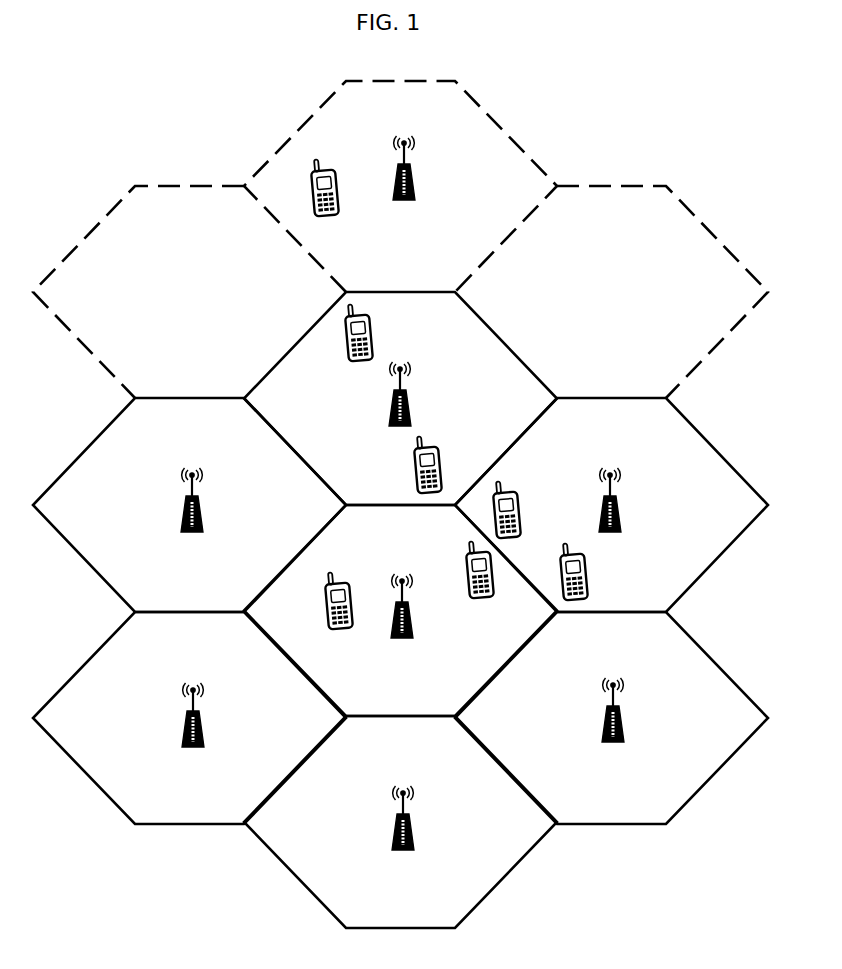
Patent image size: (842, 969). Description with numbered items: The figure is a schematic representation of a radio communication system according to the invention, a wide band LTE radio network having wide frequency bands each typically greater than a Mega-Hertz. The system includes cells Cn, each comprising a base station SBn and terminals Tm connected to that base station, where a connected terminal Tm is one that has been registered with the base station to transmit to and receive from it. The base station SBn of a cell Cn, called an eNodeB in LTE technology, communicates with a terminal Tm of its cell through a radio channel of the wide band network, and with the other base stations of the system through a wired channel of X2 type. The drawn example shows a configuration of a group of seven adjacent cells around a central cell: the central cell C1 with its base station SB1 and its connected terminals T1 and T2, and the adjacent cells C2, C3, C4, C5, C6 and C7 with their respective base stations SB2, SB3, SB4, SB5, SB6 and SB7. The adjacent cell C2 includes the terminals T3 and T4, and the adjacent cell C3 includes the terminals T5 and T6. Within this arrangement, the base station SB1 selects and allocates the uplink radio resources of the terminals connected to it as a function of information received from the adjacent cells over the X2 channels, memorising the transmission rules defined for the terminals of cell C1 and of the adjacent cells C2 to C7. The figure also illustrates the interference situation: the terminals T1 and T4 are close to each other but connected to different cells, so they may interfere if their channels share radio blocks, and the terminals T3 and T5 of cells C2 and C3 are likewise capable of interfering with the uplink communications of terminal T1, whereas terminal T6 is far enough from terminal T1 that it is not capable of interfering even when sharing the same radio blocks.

The cell C1 is at (400, 610).
The cell C2 is at (611, 505).
The cell C3 is at (400, 398).
The cell C4 is at (189, 505).
The cell C5 is at (189, 718).
The cell C6 is at (400, 822).
The cell C7 is at (611, 718).
The cell Cn is at (400, 186).
The base station SB1 is at (384, 625).
The base station SB2 is at (628, 517).
The base station SB3 is at (382, 413).
The base station SB4 is at (174, 519).
The base station SB5 is at (175, 734).
The base station SB6 is at (385, 837).
The base station SB7 is at (595, 729).
The base station SBn is at (386, 187).
The terminal T1 is at (483, 598).
The terminal T2 is at (355, 607).
The terminal T3 is at (522, 520).
The terminal T4 is at (560, 577).
The terminal T5 is at (442, 478).
The terminal T6 is at (373, 345).
The terminal Tm is at (338, 197).